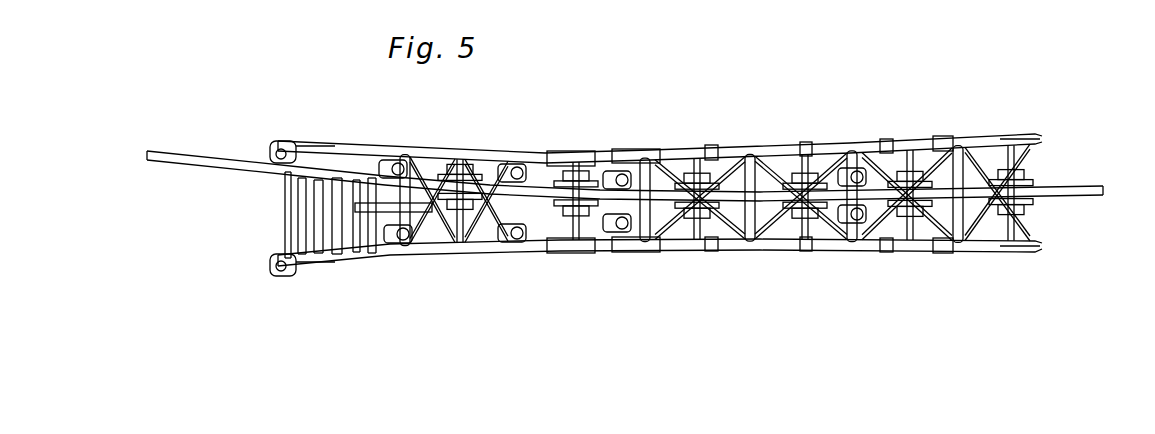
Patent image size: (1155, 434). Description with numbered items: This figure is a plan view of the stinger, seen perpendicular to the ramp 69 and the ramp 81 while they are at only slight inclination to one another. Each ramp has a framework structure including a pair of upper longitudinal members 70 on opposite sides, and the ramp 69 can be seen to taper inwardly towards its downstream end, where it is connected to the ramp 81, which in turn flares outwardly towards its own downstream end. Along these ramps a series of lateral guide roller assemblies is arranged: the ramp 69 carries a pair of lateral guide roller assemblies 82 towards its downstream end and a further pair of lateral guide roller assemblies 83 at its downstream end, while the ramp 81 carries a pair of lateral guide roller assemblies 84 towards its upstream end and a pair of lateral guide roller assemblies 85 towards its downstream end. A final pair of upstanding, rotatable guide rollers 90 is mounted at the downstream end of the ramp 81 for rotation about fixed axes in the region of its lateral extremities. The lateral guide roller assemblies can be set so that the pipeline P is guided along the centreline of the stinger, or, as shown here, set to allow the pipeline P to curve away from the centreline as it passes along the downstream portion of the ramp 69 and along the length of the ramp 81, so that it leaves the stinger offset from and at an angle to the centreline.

The pipeline P is at (187, 161).
The second ramp 69 is at (886, 278).
The upper longitudinal members 70 is at (772, 150).
The ramp 81 is at (460, 270).
The lateral guide roller assemblies 82 is at (848, 240).
The lateral guide roller assemblies 83 is at (616, 236).
The lateral guide roller assemblies 84 is at (509, 165).
The lateral guide roller assemblies 85 is at (407, 250).
The upstanding rotatable guide rollers 90 is at (285, 140).